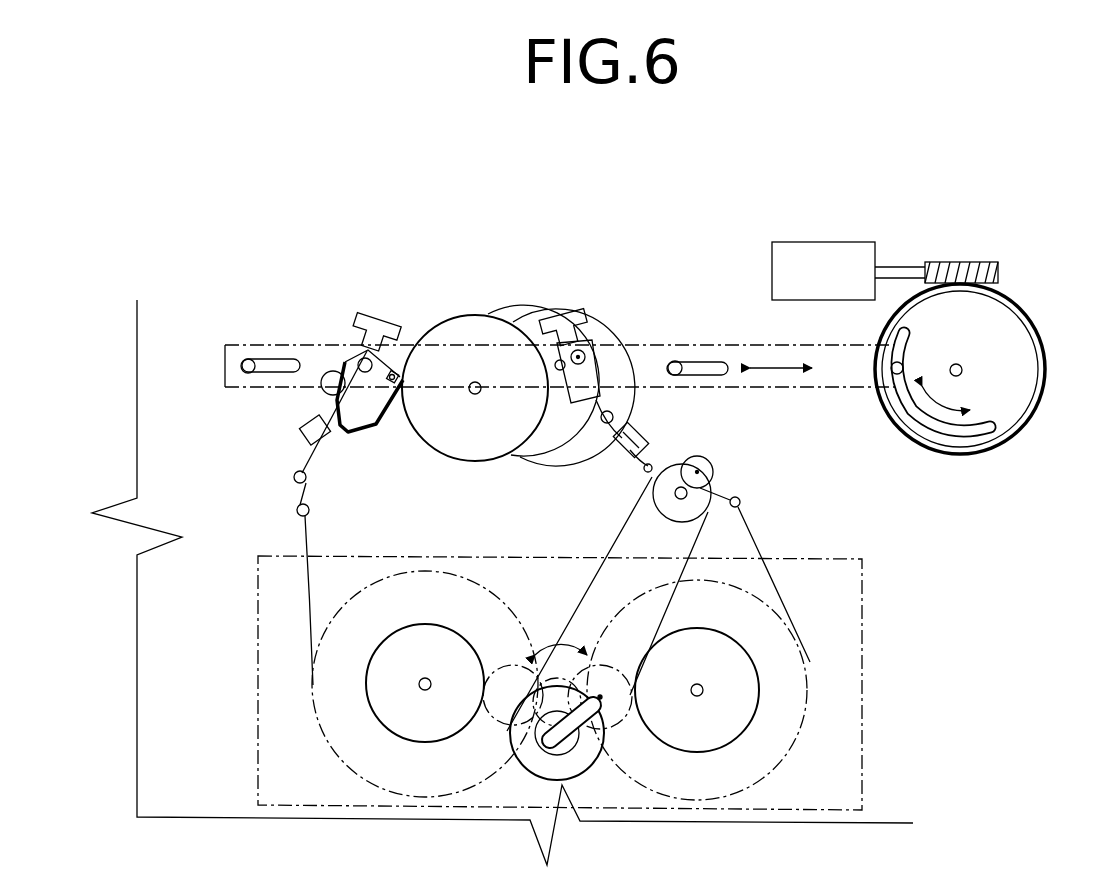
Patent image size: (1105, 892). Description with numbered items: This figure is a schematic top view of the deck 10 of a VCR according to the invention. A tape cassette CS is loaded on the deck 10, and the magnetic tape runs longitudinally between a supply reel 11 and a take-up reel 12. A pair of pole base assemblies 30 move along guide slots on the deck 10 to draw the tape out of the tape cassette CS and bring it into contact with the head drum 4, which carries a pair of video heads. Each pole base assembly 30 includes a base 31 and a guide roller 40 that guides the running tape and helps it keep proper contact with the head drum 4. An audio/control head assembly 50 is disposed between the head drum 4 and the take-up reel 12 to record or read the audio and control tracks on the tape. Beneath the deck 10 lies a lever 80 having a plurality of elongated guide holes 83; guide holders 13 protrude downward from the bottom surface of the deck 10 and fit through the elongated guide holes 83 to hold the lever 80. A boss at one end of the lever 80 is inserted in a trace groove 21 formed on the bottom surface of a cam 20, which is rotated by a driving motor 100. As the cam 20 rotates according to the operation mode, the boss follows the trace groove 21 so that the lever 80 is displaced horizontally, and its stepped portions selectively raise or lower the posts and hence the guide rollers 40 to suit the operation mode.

The head drum 4 is at (454, 316).
The deck 10 is at (137, 770).
The supply reel 11 is at (395, 738).
The take-up reel 12 is at (700, 752).
The guide holder 13 is at (252, 362).
The cam 20 is at (1050, 335).
The trace groove 21 is at (990, 430).
The pole base assembly 30 is at (580, 305).
The base 31 is at (385, 418).
The guide roller 40 is at (348, 345).
The audio/control head assembly 50 is at (700, 462).
The lever 80 is at (225, 352).
The elongated guide hole 83 is at (275, 380).
The driving motor 100 is at (843, 265).
The tape cassette CS is at (862, 725).